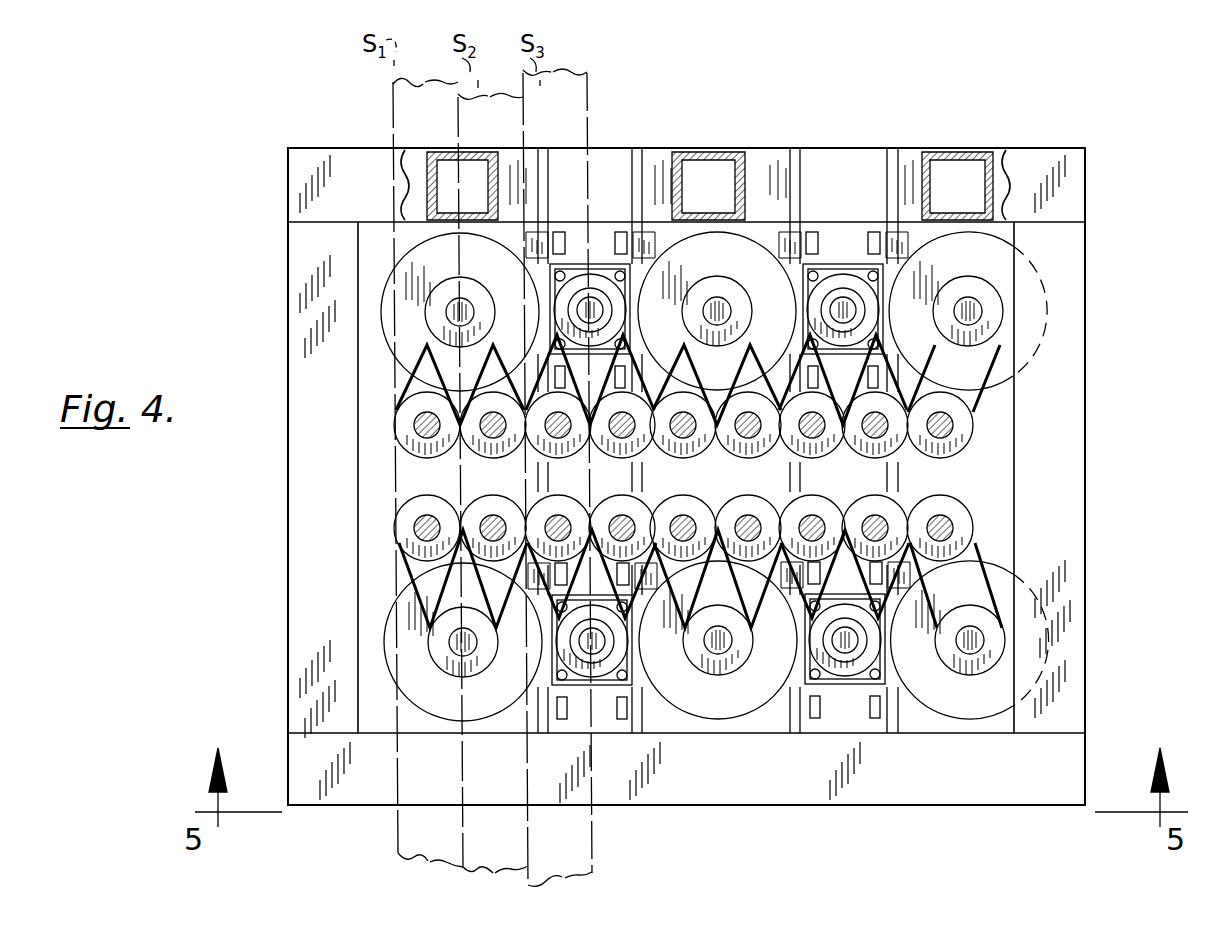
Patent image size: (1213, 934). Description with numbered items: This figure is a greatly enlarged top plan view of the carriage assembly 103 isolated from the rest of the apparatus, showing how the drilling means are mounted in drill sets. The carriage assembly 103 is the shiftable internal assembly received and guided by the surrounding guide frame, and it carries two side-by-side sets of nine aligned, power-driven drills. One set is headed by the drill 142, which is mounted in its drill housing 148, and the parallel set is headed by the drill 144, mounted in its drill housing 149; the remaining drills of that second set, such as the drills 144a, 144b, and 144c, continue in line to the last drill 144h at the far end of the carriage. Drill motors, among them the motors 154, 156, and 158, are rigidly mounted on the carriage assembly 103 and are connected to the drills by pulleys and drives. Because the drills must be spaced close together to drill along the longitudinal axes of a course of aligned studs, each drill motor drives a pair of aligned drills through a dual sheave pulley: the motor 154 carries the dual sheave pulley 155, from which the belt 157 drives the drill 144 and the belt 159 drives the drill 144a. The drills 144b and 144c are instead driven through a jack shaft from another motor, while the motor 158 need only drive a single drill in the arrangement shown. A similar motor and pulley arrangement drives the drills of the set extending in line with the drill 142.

The carriage assembly 103 is at (300, 303).
The drill 142 is at (413, 431).
The drill 144 is at (428, 520).
The drill 144a is at (452, 489).
The drill 144b is at (520, 489).
The drill 144c is at (704, 489).
The drill 144h is at (943, 522).
The drill housing 148 is at (413, 407).
The drill housing 149 is at (400, 538).
The motor 154 is at (412, 662).
The dual sheave pulley 155 is at (455, 673).
The motor 156 is at (708, 703).
The belt 157 is at (410, 578).
The motor 158 is at (958, 703).
The belt 159 is at (520, 670).